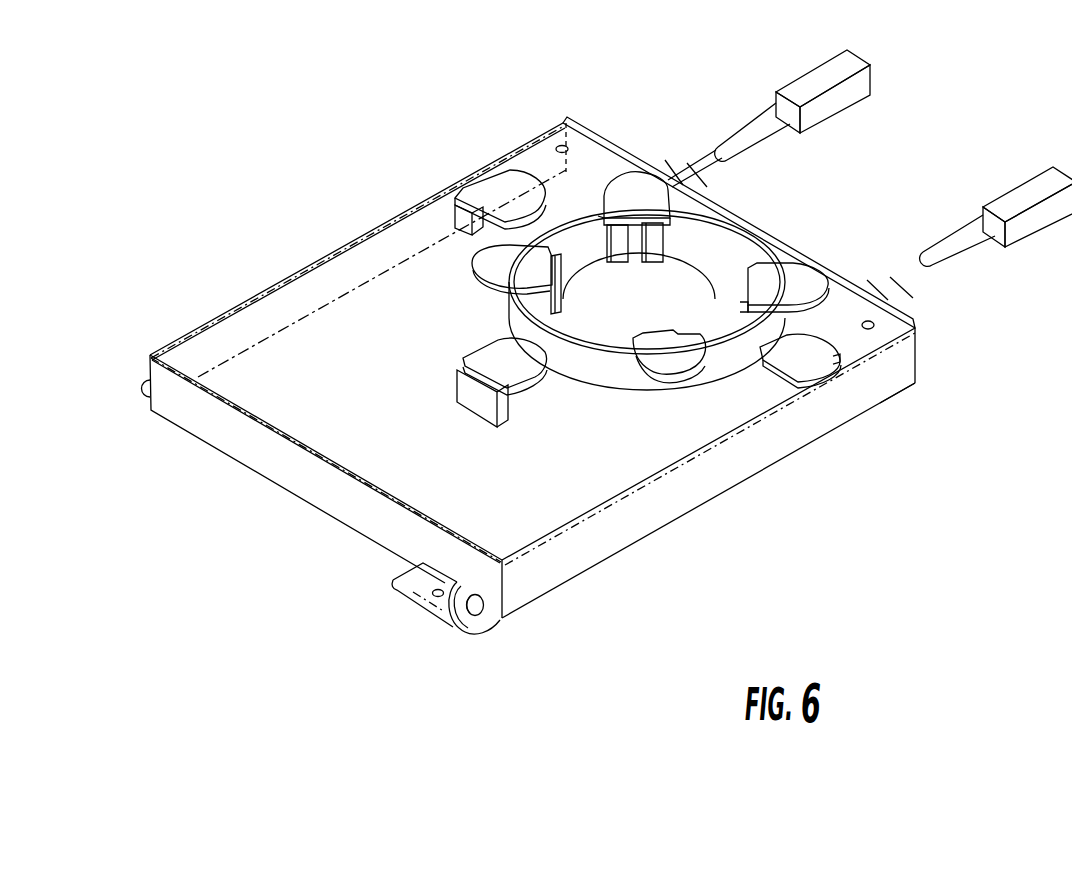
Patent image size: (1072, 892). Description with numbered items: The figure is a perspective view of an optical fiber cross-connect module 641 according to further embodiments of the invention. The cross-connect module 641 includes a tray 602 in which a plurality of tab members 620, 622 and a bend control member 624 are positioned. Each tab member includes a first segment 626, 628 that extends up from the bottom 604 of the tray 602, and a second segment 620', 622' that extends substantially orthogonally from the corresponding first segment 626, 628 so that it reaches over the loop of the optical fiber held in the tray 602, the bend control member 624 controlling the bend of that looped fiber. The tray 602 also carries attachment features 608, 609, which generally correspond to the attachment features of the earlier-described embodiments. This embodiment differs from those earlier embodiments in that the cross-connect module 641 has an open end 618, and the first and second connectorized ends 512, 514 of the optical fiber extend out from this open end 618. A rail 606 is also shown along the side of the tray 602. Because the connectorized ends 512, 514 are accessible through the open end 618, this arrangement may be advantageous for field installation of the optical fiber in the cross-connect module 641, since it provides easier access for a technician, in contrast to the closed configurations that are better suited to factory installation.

The first connectorized end 512 is at (808, 82).
The second connectorized end 514 is at (1013, 192).
The tray 602 is at (300, 462).
The bottom 604 is at (615, 458).
The rail 606 is at (938, 319).
The attachment feature 608 is at (436, 601).
The attachment feature 609 is at (484, 610).
The open end 618 is at (932, 390).
The tab member 620 is at (605, 257).
The second segment 620' is at (538, 358).
The tab member 622 is at (607, 279).
The second segment 622' is at (692, 277).
The bend control member 624 is at (730, 347).
The first segment 626 is at (453, 202).
The first segment 628 is at (562, 277).
The cross-connect module 641 is at (872, 455).